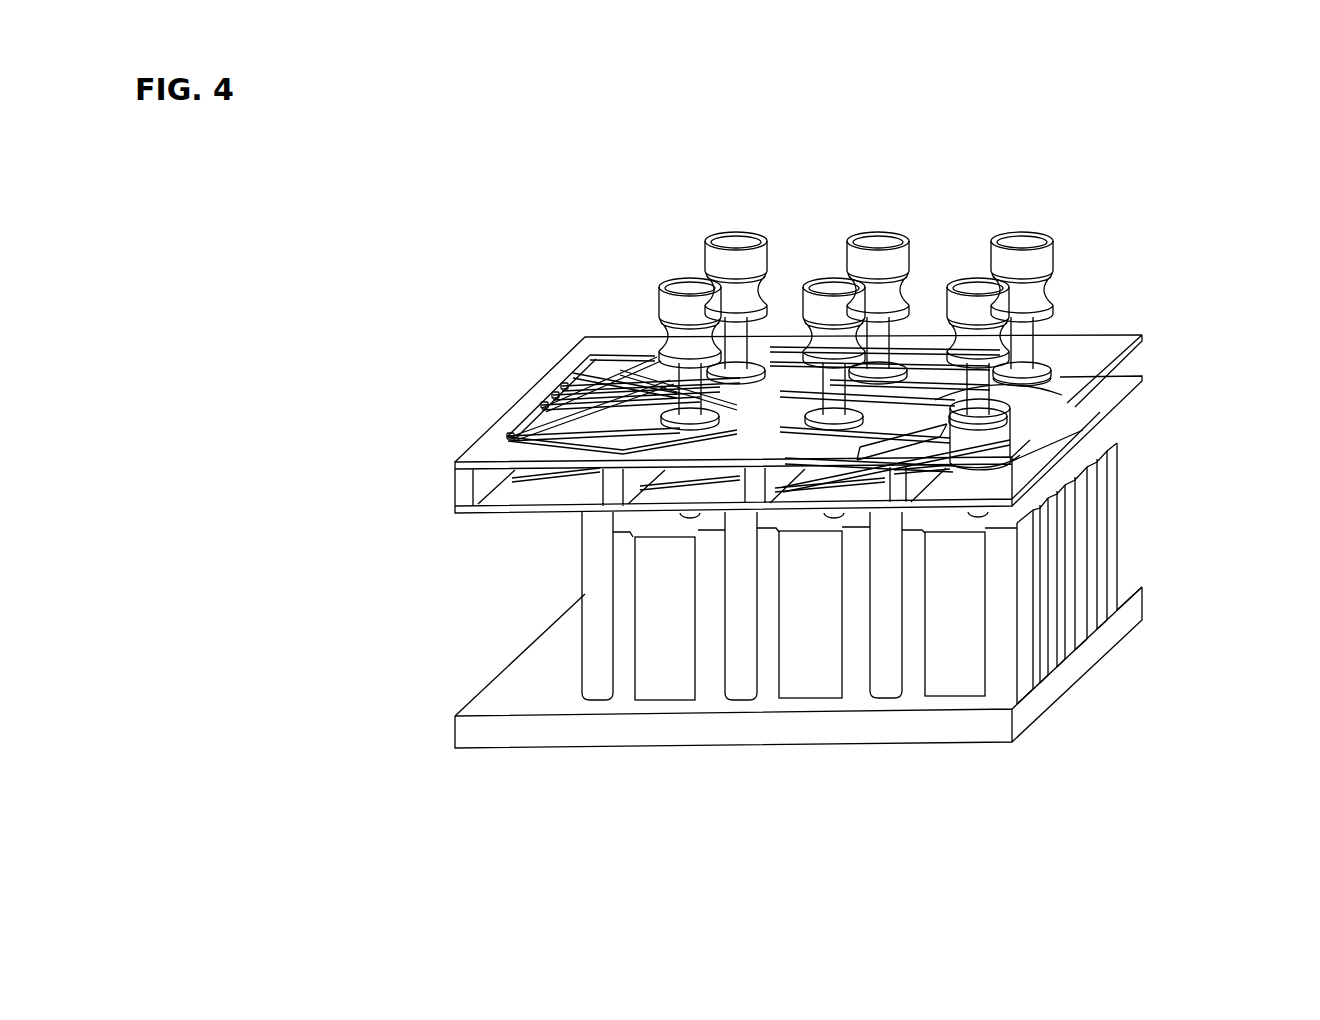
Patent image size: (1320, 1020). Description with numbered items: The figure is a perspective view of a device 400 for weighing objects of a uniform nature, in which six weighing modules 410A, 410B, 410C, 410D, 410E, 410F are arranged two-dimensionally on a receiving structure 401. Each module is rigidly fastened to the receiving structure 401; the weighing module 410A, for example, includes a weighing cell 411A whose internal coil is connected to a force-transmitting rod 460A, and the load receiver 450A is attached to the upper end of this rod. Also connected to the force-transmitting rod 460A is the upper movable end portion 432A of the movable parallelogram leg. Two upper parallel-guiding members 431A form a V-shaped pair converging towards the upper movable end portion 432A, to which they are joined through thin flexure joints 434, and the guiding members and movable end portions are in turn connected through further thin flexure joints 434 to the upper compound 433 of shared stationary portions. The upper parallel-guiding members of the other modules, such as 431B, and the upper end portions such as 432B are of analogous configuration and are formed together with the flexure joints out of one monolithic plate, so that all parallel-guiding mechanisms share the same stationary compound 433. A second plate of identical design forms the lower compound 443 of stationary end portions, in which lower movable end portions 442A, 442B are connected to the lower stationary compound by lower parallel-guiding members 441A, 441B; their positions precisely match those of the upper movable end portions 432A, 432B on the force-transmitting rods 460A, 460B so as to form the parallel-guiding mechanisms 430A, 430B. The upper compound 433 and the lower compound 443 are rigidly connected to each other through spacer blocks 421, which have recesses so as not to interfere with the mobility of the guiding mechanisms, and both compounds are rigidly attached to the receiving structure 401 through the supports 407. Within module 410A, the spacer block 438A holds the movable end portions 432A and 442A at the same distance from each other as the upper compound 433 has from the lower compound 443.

The device 400 is at (505, 296).
The receiving structure 401 is at (540, 676).
The supports 407 is at (585, 592).
The weighing module 410A is at (950, 605).
The weighing module 410B is at (805, 590).
The weighing module 410C is at (664, 640).
The weighing module 410D is at (1054, 208).
The weighing module 410E is at (875, 205).
The weighing module 410F is at (700, 226).
The weighing cell 411A is at (1000, 608).
The spacer blocks 421 is at (612, 483).
The parallel-guiding mechanism 430A is at (891, 382).
The parallel-guiding mechanism 430B is at (738, 398).
The upper parallel-guiding members 431A is at (935, 400).
The upper parallel-guiding members 431B is at (648, 390).
The upper movable end portion 432A is at (1040, 410).
The upper movable end portion 432B is at (848, 388).
The upper compound of shared stationary portions 433 is at (517, 457).
The thin flexure joints 434 is at (657, 420).
The spacer block 438A is at (993, 437).
The lower parallel-guiding members 441A is at (867, 463).
The lower parallel-guiding members 441B is at (697, 467).
The lower movable end portion 442A is at (1000, 463).
The lower movable end portion 442B is at (830, 465).
The lower compound of stationary end portions 443 is at (530, 495).
The load receiver 450A is at (980, 310).
The force-transmitting rod 460A is at (1030, 360).
The force-transmitting rod 460B is at (833, 387).